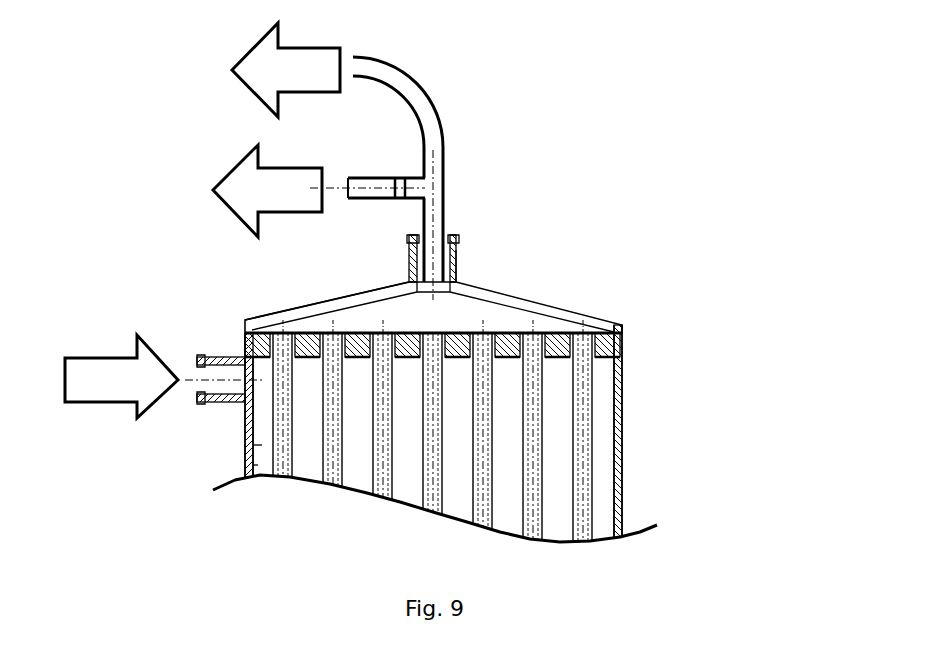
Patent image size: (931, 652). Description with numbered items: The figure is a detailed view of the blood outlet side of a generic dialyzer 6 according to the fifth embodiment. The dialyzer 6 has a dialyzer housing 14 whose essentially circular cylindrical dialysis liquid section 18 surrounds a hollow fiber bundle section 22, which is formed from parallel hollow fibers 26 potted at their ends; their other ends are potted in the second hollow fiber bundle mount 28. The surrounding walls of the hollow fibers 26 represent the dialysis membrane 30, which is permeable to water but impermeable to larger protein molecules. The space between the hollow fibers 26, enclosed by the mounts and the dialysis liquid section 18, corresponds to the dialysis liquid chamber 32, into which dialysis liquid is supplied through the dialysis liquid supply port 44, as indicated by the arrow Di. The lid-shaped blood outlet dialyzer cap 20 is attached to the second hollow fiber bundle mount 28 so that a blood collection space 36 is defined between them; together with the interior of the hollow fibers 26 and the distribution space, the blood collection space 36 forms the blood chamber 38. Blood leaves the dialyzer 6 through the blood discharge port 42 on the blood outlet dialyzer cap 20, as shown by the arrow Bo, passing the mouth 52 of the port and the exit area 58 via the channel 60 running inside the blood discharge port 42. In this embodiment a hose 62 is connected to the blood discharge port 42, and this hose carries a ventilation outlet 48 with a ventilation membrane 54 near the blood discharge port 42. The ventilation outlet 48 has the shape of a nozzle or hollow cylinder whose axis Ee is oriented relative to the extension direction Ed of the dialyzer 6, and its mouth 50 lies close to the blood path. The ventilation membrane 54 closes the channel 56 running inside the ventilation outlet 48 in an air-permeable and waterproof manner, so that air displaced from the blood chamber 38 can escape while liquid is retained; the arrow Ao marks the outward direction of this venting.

The dialyzer 6 is at (637, 120).
The dialyzer housing 14 is at (493, 445).
The dialysis liquid section 18 is at (623, 468).
The blood outlet dialyzer cap 20 is at (600, 308).
The hollow fiber bundle section 22 is at (604, 425).
The hollow fibers 26 is at (595, 400).
The second hollow fiber bundle mount 28 is at (619, 352).
The dialysis membrane 30 is at (595, 400).
The dialysis liquid chamber 32 is at (262, 465).
The blood collection space 36 is at (512, 312).
The blood chamber 38 is at (275, 445).
The blood discharge port 42 is at (459, 263).
The dialysis liquid supply port 44 is at (197, 398).
The ventilation outlet 48 is at (384, 200).
The mouth 50 is at (426, 188).
The mouth 52 is at (290, 318).
The ventilation membrane 54 is at (398, 178).
The channel 56 is at (382, 178).
The exit area 58 is at (455, 263).
The channel 60 is at (440, 280).
The hose 62 is at (430, 110).
The blood discharge flow Bo is at (286, 70).
The air outlet flow Ao is at (267, 191).
The dialysis liquid supply flow Di is at (121, 376).
The extension direction Ed is at (433, 228).
The axis Ee is at (378, 200).